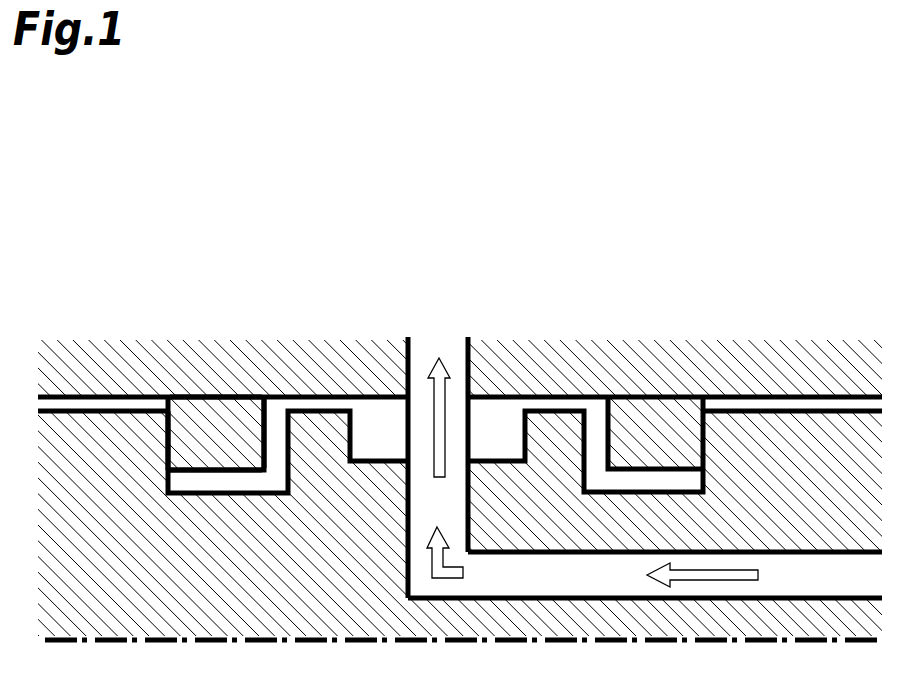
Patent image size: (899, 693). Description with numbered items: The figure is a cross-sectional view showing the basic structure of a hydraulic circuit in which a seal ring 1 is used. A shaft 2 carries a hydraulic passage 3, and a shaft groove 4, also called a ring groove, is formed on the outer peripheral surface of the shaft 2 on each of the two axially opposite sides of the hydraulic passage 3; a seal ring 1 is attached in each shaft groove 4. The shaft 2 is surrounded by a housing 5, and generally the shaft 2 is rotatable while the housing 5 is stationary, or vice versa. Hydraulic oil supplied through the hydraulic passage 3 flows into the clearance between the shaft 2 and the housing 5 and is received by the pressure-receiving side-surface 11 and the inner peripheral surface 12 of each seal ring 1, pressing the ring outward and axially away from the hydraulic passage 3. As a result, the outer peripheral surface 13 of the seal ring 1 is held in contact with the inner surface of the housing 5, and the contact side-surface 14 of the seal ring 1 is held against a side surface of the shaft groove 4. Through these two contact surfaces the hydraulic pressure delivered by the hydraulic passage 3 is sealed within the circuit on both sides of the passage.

The seal ring 1 is at (203, 417).
The shaft 2 is at (449, 490).
The hydraulic passage 3 is at (422, 489).
The shaft groove 4 is at (271, 491).
The housing 5 is at (449, 490).
The pressure-receiving side-surface 11 is at (278, 447).
The inner peripheral surface 12 is at (244, 483).
The outer peripheral surface 13 is at (239, 385).
The contact side-surface 14 is at (156, 447).